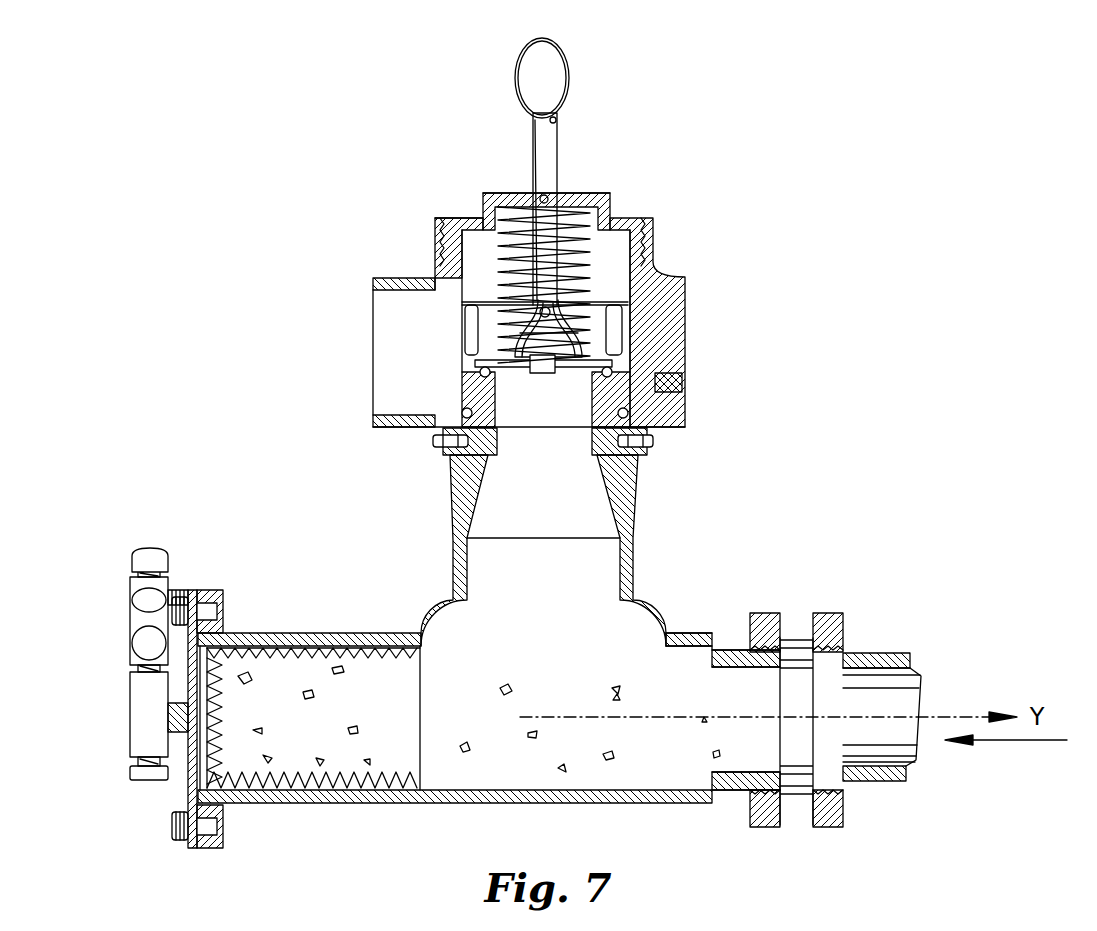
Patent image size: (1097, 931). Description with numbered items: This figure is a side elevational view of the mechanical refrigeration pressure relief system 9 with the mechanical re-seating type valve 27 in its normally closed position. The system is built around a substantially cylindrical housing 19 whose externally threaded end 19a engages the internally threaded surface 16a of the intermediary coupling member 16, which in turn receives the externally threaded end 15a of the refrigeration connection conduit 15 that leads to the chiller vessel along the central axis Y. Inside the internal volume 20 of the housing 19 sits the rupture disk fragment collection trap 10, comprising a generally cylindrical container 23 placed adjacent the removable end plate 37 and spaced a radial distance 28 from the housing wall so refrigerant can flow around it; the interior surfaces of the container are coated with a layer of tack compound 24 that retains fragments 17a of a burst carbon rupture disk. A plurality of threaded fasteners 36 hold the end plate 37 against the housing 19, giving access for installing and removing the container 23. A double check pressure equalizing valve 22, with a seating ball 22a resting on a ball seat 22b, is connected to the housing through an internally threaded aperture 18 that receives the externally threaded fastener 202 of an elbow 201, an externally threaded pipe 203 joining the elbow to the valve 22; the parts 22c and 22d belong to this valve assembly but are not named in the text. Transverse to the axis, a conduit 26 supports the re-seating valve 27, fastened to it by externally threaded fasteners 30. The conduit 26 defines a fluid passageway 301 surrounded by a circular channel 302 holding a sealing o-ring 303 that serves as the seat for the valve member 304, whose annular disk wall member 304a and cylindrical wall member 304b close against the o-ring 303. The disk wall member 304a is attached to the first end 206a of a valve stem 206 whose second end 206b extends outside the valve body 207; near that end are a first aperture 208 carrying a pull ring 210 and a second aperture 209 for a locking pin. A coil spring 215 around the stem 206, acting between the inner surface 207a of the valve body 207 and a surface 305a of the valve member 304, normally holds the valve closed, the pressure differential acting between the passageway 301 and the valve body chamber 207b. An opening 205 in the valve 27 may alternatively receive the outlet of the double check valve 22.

The mechanical refrigeration pressure relief system 9 is at (672, 548).
The rupture disk fragment collection trap 10 is at (430, 632).
The refrigeration connection conduit 15 is at (896, 653).
The externally threaded end 15a is at (832, 672).
The intermediary coupling member 16 is at (764, 614).
The internally threaded surface 16a is at (760, 640).
The fragments 17a is at (272, 760).
The aperture 18 is at (185, 752).
The housing 19 is at (670, 633).
The externally threaded end 19a is at (747, 668).
The internal volume 20 is at (495, 792).
The double check pressure equalizing valve 22 is at (130, 580).
The seating ball 22a is at (133, 612).
The ball seat 22b is at (133, 655).
The valve connector 22c is at (170, 590).
The valve cap 22d is at (140, 557).
The cylindrical container 23 is at (358, 778).
The tack compound 24 is at (318, 646).
The conduit 26 is at (640, 500).
The mechanical re-seating type valve 27 is at (686, 249).
The radial distance 28 is at (308, 646).
The externally threaded fasteners 30 is at (655, 441).
The threaded fasteners 36 is at (180, 838).
The removable end plate 37 is at (185, 800).
The elbow 201 is at (135, 738).
The externally threaded fastener 202 is at (172, 700).
The externally threaded pipe 203 is at (136, 668).
The opening 205 is at (672, 385).
The valve stem 206 is at (558, 155).
The first end 206a is at (545, 376).
The second end 206b is at (535, 128).
The valve body 207 is at (645, 222).
The inner surface 207a is at (596, 210).
The valve body chamber 207b is at (460, 270).
The first aperture 208 is at (556, 122).
The second aperture 209 is at (540, 197).
The pull ring 210 is at (560, 57).
The coil spring 215 is at (505, 221).
The fluid passageway 301 is at (458, 466).
The circular channel 302 is at (585, 352).
The o-ring 303 is at (470, 375).
The valve member 304 is at (612, 306).
The annular disk wall member 304a is at (468, 335).
The cylindrical wall member 304b is at (485, 276).
The surface 305a is at (562, 316).